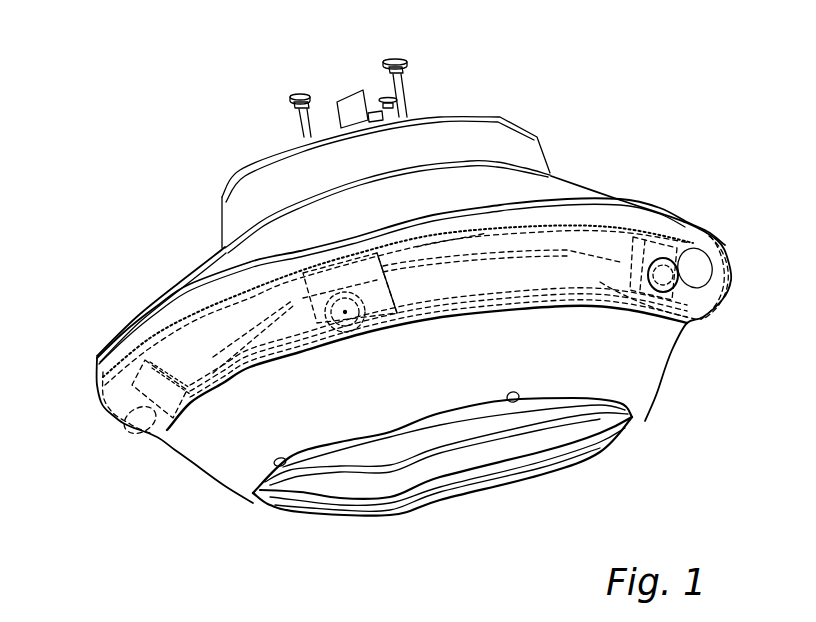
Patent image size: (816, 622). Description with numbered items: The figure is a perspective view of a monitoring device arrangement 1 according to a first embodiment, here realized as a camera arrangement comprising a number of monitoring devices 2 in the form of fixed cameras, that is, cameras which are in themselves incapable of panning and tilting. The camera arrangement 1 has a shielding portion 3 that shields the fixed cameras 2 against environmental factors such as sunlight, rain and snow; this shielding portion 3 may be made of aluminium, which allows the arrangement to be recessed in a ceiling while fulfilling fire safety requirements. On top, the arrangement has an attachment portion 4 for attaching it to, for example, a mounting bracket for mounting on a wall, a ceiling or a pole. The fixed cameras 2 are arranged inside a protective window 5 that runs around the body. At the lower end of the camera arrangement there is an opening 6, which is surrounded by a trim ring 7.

The monitoring device arrangement 1 is at (606, 109).
The monitoring devices 2 is at (682, 268).
The shielding portion 3 is at (228, 255).
The attachment portion 4 is at (350, 97).
The protective window 5 is at (700, 283).
The opening 6 is at (425, 432).
The trim ring 7 is at (215, 470).